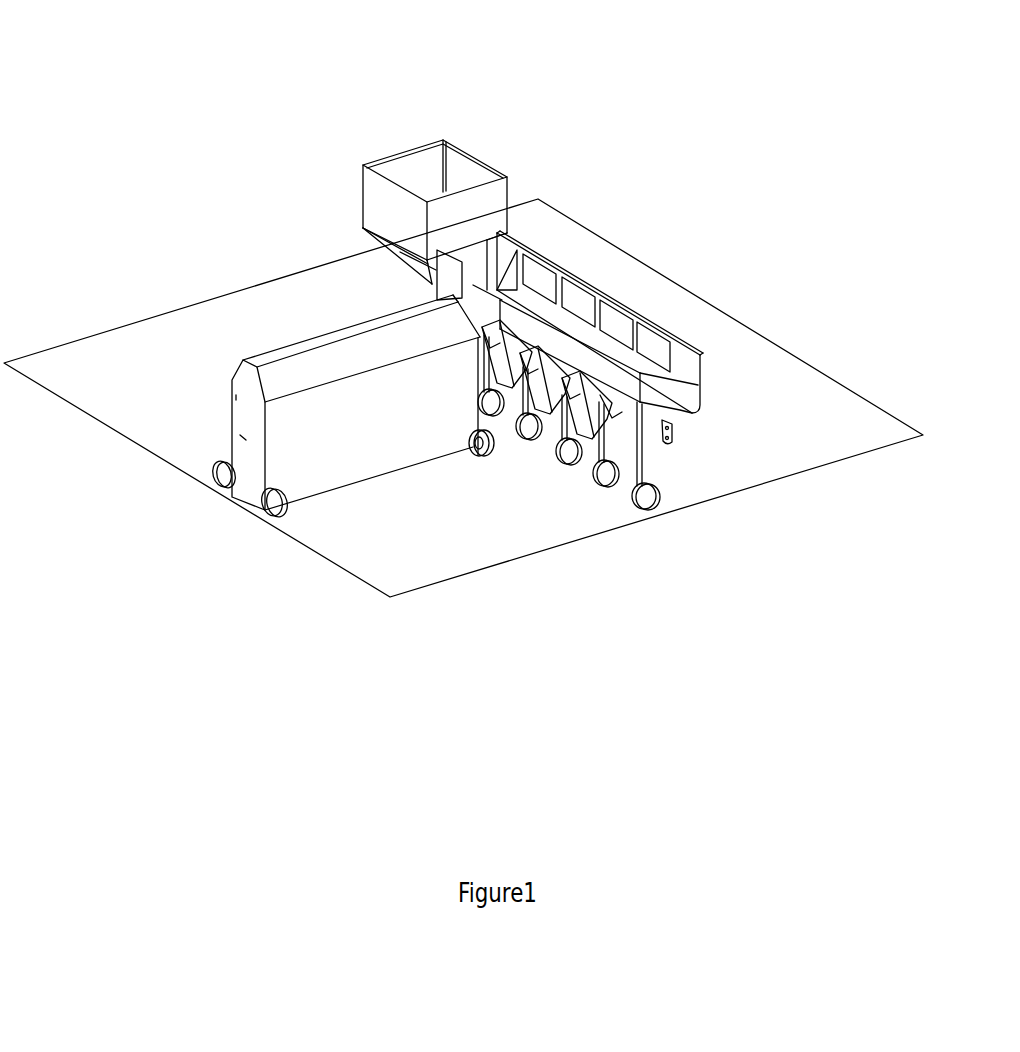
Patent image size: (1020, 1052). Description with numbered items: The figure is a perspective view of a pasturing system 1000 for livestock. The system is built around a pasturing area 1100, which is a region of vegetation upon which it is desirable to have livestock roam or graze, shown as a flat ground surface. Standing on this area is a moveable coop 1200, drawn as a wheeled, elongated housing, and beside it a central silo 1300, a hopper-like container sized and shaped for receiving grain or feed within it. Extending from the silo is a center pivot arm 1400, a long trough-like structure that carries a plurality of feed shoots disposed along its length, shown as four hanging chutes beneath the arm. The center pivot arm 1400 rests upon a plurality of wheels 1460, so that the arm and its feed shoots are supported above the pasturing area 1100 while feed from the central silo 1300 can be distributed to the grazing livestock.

The pasturing system 1000 is at (464, 358).
The pasturing area 1100 is at (207, 338).
The moveable coop 1200 is at (367, 390).
The central silo 1300 is at (467, 217).
The center pivot arm 1400 is at (618, 357).
The wheels 1460 is at (650, 494).